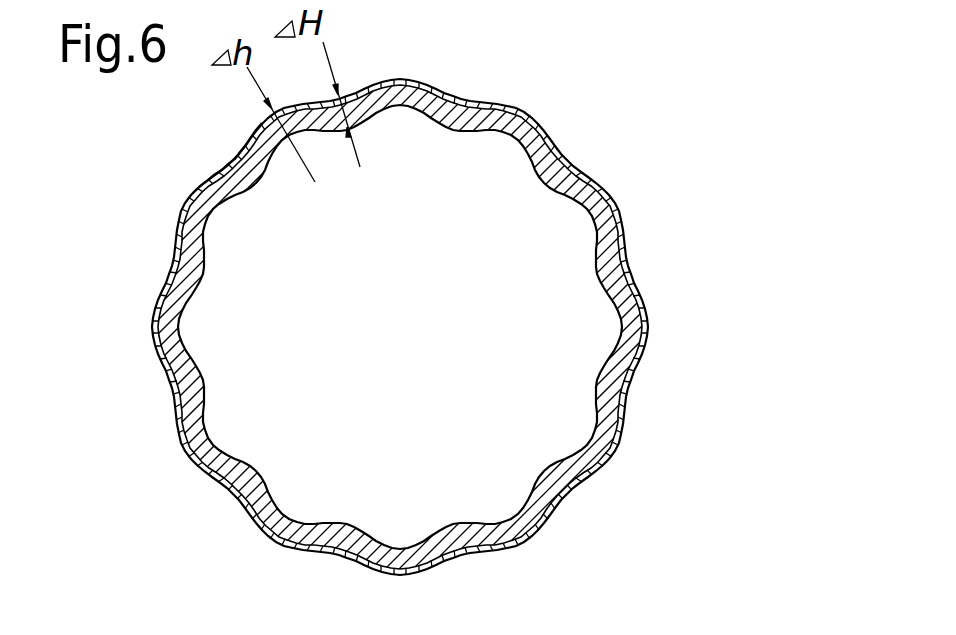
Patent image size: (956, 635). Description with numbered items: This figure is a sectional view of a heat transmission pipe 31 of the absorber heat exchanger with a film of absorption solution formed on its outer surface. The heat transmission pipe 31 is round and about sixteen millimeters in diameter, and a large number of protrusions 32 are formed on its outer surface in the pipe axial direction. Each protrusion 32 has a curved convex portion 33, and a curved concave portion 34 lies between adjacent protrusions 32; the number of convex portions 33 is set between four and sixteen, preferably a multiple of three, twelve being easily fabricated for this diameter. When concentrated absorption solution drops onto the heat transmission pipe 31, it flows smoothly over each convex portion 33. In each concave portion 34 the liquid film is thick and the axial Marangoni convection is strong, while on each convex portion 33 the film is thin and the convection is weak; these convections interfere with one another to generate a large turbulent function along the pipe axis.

The heat transmission pipe 31 is at (478, 290).
The protrusion 32 is at (403, 83).
The convex portion 33 is at (365, 90).
The concave portion 34 is at (240, 163).